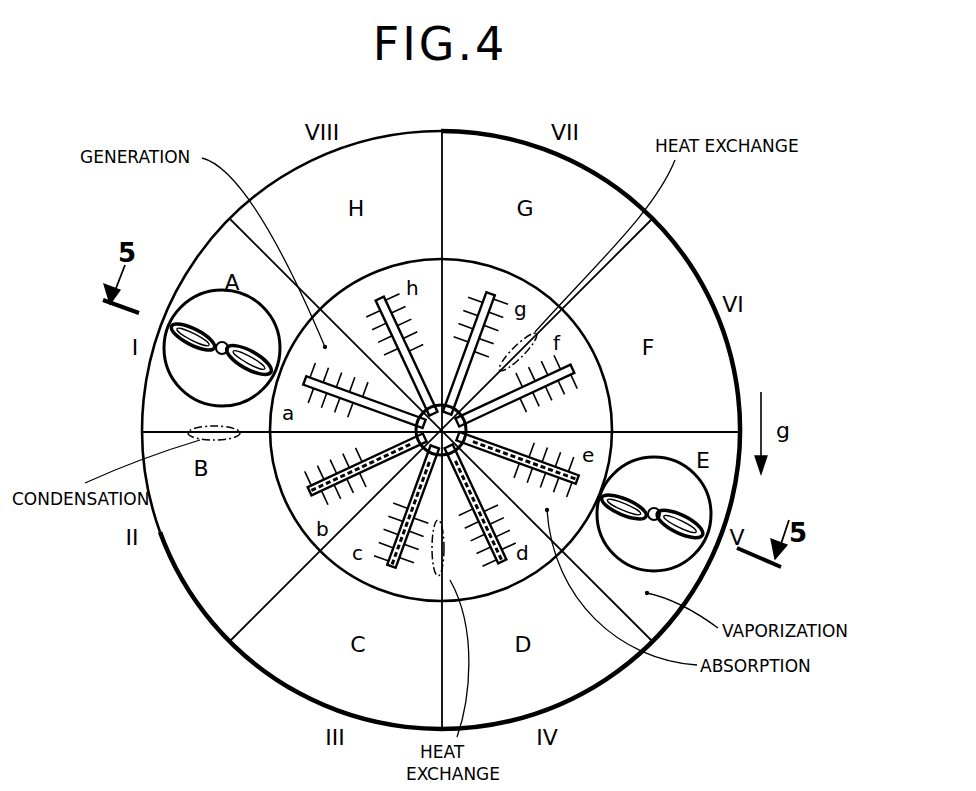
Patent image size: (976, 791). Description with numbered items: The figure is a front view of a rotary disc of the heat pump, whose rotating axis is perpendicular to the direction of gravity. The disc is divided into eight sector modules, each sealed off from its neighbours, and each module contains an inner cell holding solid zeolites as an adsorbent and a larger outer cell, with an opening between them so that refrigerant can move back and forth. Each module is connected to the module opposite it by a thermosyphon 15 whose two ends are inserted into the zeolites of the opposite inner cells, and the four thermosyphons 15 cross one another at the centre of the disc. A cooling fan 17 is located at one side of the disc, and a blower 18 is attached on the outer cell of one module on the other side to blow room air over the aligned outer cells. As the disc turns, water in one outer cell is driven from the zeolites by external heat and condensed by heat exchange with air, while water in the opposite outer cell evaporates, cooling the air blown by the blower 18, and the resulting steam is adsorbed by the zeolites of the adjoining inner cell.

The thermosyphon 15 is at (372, 407).
The cooling fan 17 is at (183, 340).
The blower 18 is at (690, 518).